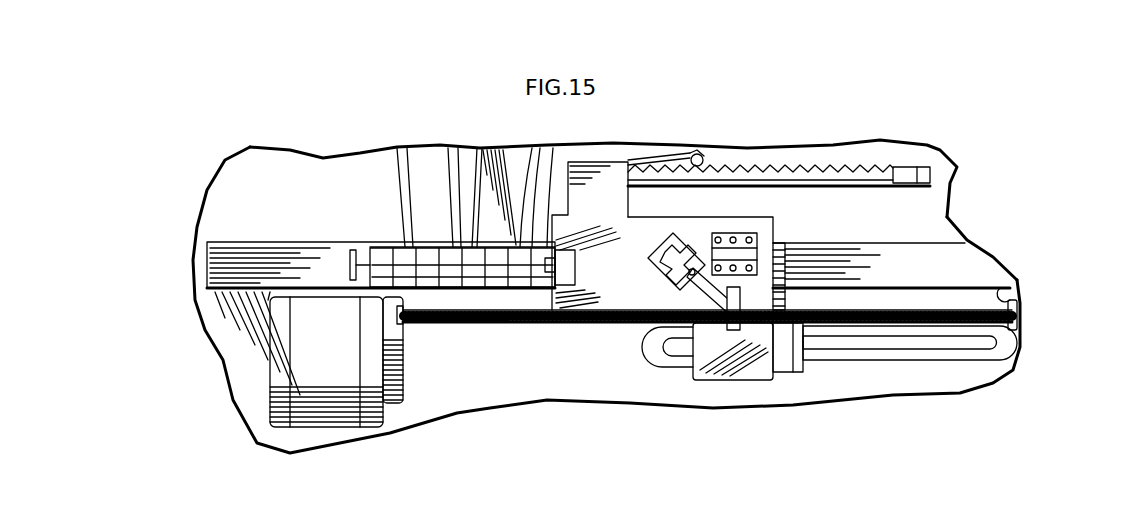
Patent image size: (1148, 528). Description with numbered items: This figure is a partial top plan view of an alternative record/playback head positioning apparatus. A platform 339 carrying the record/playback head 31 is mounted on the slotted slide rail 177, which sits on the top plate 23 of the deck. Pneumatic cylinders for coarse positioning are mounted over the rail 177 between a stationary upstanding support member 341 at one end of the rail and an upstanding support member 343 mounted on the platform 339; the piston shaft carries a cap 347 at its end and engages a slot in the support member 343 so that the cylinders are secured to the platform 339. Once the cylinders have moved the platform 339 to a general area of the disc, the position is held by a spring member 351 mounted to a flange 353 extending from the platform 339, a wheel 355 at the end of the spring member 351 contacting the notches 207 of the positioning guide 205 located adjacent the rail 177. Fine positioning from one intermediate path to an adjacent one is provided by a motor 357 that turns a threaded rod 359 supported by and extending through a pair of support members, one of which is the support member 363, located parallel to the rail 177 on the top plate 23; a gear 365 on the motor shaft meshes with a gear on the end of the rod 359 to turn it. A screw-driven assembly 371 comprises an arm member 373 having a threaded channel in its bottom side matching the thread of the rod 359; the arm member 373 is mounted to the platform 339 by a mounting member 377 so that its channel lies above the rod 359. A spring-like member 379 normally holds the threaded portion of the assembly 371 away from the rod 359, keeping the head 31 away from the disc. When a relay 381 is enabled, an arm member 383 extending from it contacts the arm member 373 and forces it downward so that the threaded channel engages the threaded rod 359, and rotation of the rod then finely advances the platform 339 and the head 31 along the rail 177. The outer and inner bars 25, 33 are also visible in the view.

The top plate 23 is at (932, 377).
The outer handle bar 25 is at (820, 360).
The record/playback head 31 is at (725, 370).
The inner handle bar 33 is at (873, 348).
The slide rail 177 is at (957, 250).
The positioning guide 205 is at (896, 183).
The notches 207 is at (826, 165).
The platform 339 is at (587, 300).
The stationary upstanding support member 341 is at (350, 258).
The upstanding support member 343 is at (572, 252).
The cap 347 is at (578, 266).
The spring member 351 is at (630, 160).
The flange 353 is at (583, 160).
The wheel 355 is at (705, 160).
The motor 357 is at (377, 428).
The threaded rod 359 is at (495, 313).
The support member 363 is at (1003, 290).
The gear 365 is at (390, 358).
The screw-driven assembly 371 is at (726, 212).
The arm member 373 is at (858, 292).
The mounting member 377 is at (762, 236).
The spring-like member 379 is at (776, 280).
The relay 381 is at (675, 232).
The arm member 383 is at (700, 292).